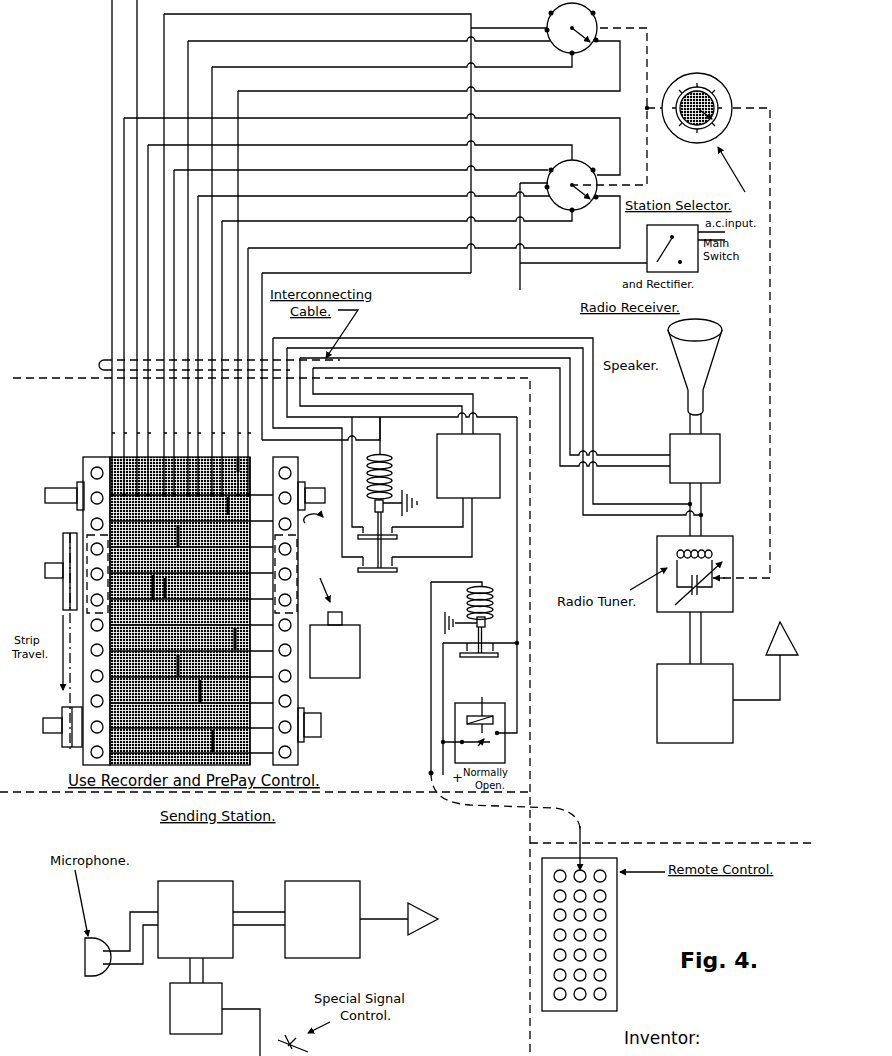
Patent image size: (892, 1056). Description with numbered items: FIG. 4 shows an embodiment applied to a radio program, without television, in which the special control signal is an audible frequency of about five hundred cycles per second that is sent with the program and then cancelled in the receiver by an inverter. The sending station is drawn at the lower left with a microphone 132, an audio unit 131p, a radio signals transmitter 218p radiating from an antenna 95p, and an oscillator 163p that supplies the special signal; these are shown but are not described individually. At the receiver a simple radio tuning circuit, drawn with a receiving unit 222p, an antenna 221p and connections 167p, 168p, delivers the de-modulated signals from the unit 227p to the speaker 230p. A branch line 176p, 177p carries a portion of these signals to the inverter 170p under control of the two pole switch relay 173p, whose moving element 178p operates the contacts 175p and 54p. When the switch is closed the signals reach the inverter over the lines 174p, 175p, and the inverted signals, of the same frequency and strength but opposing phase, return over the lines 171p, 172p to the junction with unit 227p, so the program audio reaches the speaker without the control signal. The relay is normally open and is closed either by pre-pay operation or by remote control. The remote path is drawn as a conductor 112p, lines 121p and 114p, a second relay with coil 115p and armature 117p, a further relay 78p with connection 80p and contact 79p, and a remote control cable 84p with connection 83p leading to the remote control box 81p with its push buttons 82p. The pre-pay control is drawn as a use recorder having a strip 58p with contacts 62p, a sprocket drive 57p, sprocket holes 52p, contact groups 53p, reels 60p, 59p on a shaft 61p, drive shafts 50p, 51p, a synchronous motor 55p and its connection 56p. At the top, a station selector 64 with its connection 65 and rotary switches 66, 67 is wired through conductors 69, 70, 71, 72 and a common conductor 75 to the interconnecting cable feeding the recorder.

The connection to common conductor 71 is at (466, 38).
The connection to common conductor 70 is at (466, 145).
The common conductor 75 is at (472, 107).
The connection to switch 69 is at (568, 58).
The rotary switch 67 is at (582, 41).
The conductor 72 is at (518, 236).
The rotary switch 66 is at (582, 200).
The selector connection 65 is at (648, 106).
The station selector 64 is at (712, 82).
The branch line 176p is at (612, 504).
The branch line 177p is at (640, 515).
The line 172p is at (617, 455).
The line 171p is at (645, 466).
The speaker 230p is at (704, 372).
The unit 227p is at (720, 459).
The connection 168p is at (702, 493).
The connection 167p is at (703, 520).
The radio receiving unit 222p is at (710, 672).
The antenna 221p is at (768, 645).
The two pole switch relay 173p is at (382, 454).
The relay armature 178p is at (367, 470).
The inverter 170p is at (436, 464).
The line 175p is at (410, 527).
The contact 54p is at (341, 566).
The line 174p is at (468, 557).
The conductor 112p is at (516, 574).
The conductor 121p is at (430, 710).
The relay coil 115p is at (466, 604).
The relay armature 117p is at (485, 625).
The relay 78p is at (480, 733).
The connection 80p is at (479, 711).
The contact 79p is at (470, 745).
The connection 114p is at (430, 770).
The remote control cable 84p is at (512, 810).
The connection 83p is at (582, 848).
The remote control box 81p is at (617, 922).
The push buttons 82p is at (602, 957).
The strip contacts 62p is at (122, 438).
The recording strip 58p is at (132, 755).
The sprocket drive 57p is at (78, 488).
The sprocket holes 52p is at (290, 679).
The contact group 53p is at (88, 537).
The supply reel 60p is at (63, 560).
The take-up reel 59p is at (66, 711).
The reel shaft 61p is at (66, 745).
The drive shaft 50p is at (313, 495).
The drive shaft 51p is at (321, 724).
The synchronous motor 55p is at (340, 628).
The motor connection 56p is at (340, 597).
The microphone 132 is at (101, 944).
The audio unit 131p is at (200, 890).
The radio signals transmitter 218p is at (312, 890).
The transmitting antenna 95p is at (432, 910).
The oscillator 163p is at (222, 990).